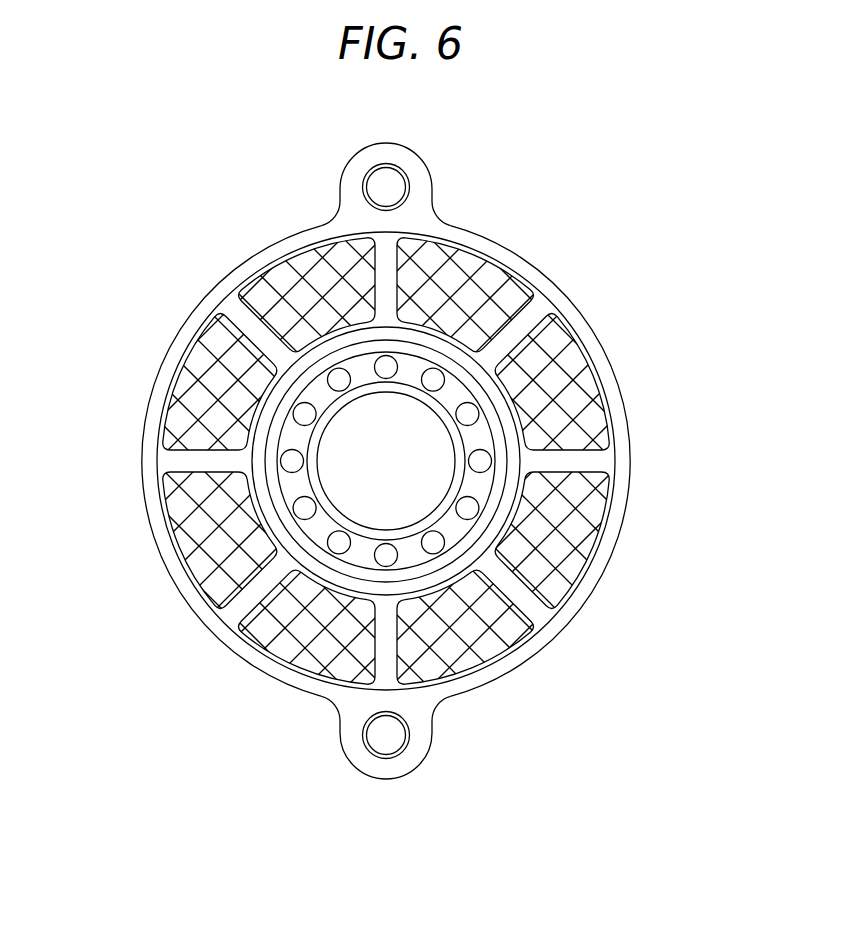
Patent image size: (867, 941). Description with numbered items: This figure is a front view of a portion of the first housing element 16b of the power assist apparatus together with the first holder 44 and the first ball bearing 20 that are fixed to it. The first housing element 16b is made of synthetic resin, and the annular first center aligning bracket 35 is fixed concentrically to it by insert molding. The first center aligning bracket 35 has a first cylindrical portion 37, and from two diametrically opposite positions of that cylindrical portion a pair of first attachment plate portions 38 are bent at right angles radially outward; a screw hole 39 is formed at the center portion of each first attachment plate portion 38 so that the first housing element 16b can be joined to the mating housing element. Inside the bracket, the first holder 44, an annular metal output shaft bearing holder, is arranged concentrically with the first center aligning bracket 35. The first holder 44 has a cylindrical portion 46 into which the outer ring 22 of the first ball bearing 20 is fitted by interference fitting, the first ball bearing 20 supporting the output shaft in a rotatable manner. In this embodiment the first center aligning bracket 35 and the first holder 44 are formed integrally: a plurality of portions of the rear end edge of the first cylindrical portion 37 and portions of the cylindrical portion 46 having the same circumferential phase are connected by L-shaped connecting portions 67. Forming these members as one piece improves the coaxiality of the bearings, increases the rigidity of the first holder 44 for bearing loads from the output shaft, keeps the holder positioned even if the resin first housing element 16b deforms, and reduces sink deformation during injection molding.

The first housing element 16b is at (503, 270).
The first ball bearing 20 is at (560, 568).
The outer ring 22 is at (497, 492).
The first center aligning bracket 35 is at (553, 297).
The first cylindrical portion 37 is at (620, 437).
The first attachment plate portion 38 is at (352, 180).
The screw hole 39 is at (400, 176).
The first holder 44 is at (277, 397).
The cylindrical portion 46 is at (257, 430).
The L-shaped connecting portion 67 is at (388, 277).